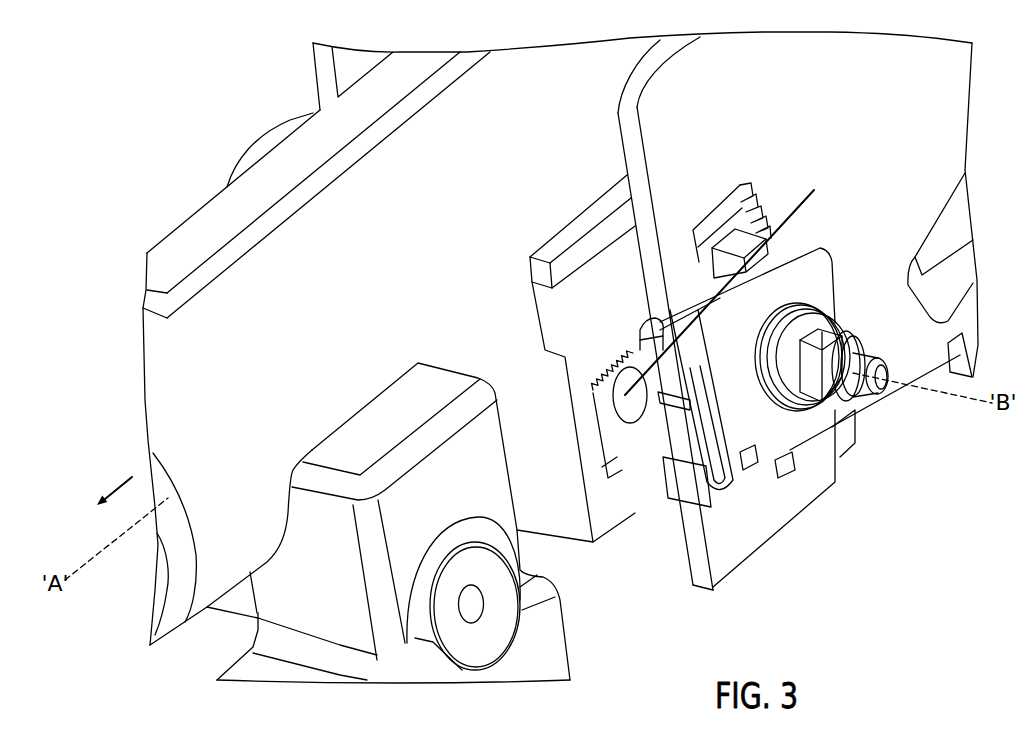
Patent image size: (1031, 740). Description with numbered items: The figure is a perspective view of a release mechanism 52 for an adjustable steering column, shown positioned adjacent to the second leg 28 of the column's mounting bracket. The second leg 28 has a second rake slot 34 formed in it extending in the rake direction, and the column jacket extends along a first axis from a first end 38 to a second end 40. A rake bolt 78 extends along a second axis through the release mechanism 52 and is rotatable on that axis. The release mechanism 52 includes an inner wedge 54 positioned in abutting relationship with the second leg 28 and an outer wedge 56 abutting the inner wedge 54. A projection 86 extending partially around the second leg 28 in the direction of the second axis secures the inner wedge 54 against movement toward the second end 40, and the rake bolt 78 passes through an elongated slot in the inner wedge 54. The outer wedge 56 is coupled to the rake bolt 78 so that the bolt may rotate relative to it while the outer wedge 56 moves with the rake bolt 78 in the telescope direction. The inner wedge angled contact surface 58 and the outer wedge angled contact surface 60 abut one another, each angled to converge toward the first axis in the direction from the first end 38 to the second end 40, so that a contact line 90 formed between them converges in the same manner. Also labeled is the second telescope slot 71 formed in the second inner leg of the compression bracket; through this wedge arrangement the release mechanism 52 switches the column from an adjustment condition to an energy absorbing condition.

The second leg 28 is at (818, 487).
The second rake slot 34 is at (775, 466).
The first end 38 is at (122, 485).
The second end 40 is at (632, 15).
The release mechanism 52 is at (632, 320).
The inner wedge 54 is at (660, 330).
The outer wedge 56 is at (740, 452).
The inner wedge angled contact surface 58 is at (708, 299).
The outer wedge angled contact surface 60 is at (703, 320).
The second telescope slot 71 is at (618, 417).
The rake bolt 78 is at (862, 385).
The projection 86 is at (653, 337).
The contact line 90 is at (783, 218).